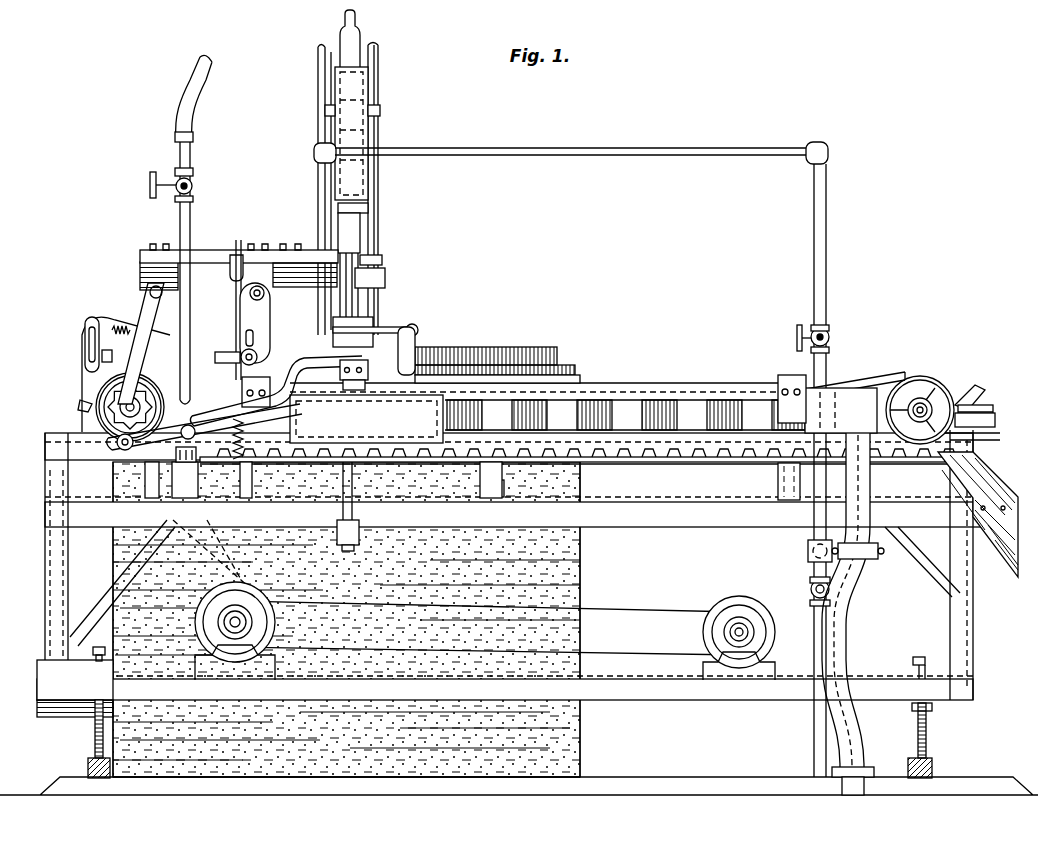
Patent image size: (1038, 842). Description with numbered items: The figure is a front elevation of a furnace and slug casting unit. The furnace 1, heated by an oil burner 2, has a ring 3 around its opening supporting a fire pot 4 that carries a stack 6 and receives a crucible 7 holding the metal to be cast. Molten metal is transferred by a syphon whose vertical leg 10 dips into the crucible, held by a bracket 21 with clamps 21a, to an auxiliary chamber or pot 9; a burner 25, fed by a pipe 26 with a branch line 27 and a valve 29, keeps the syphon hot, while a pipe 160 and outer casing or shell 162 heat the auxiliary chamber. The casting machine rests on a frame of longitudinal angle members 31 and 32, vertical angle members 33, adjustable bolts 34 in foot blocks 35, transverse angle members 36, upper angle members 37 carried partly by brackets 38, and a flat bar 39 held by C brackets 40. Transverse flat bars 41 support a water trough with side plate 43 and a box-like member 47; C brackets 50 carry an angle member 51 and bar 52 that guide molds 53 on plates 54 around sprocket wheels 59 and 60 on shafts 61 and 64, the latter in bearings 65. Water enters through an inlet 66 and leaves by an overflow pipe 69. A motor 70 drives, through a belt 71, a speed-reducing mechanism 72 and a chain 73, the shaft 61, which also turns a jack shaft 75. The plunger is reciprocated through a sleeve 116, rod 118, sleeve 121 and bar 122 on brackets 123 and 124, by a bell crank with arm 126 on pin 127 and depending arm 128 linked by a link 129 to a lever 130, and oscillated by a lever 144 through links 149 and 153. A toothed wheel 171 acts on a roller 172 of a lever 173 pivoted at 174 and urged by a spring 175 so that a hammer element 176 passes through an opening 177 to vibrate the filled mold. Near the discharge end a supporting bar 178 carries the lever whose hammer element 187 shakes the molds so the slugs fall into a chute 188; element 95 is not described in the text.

The furnace 1 is at (580, 742).
The oil burner 2 is at (55, 714).
The ring 3 is at (577, 373).
The fire pot 4 is at (566, 362).
The stack 6 is at (378, 90).
The crucible 7 is at (545, 347).
The auxiliary chamber or pot 9 is at (380, 345).
The vertical leg 10 is at (340, 30).
The bracket 21 is at (352, 183).
The clamps or straps 21a is at (380, 112).
The burner 25 is at (320, 190).
The pipe 26 is at (815, 733).
The branch line 27 is at (814, 193).
The valve 29 is at (810, 590).
The longitudinally extending angle members 31 is at (700, 515).
The angle members 32 is at (665, 700).
The vertically disposed angle members 33 is at (46, 482).
The adjustable bolts 34 is at (97, 733).
The blocks 35 is at (90, 763).
The transversely extending angle members 36 is at (150, 492).
The angle members 37 is at (55, 447).
The brackets 38 is at (170, 492).
The flat bar 39 is at (650, 460).
The C brackets 40 is at (778, 480).
The flat bars 41 is at (245, 445).
The side plate 43 is at (547, 395).
The box-like member 47 is at (425, 418).
The C brackets 50 is at (802, 386).
The angle member 51 is at (715, 390).
The bar 52 is at (97, 355).
The molds 53 is at (622, 447).
The plate 54 is at (696, 458).
The sprocket wheel 59 is at (125, 405).
The sprocket wheel 60 is at (935, 382).
The shaft 61 is at (110, 405).
The shaft 64 is at (916, 398).
The bearings 65 is at (886, 375).
The inlet 66 is at (191, 220).
The overflow pipe 69 is at (870, 484).
The motor 70 is at (735, 605).
The belt 71 is at (620, 650).
The speed-reducing mechanism 72 is at (240, 654).
The chain 73 is at (174, 579).
The jack shaft 75 is at (85, 407).
The bracket 95 is at (356, 526).
The sleeve 116 is at (385, 280).
The rod 118 is at (368, 208).
The sleeve 121 is at (352, 232).
The bar 122 is at (222, 250).
The bracket 123 is at (262, 268).
The bracket 124 is at (160, 277).
The arm 126 is at (323, 281).
The pin 127 is at (250, 291).
The depending arm 128 is at (243, 310).
The link 129 is at (128, 342).
The lever 130 is at (90, 322).
The lever 144 is at (150, 295).
The link 149 is at (240, 255).
The link 153 is at (383, 262).
The tube or pipe 160 is at (420, 338).
The outer casing or shell 162 is at (414, 324).
The toothed wheel 171 is at (110, 412).
The roller 172 is at (130, 443).
The lever 173 is at (210, 370).
The pivot 174 is at (197, 458).
The spring 175 is at (292, 442).
The hammer element 176 is at (366, 382).
The opening 177 is at (353, 392).
The supporting bar 178 is at (977, 434).
The hammer element 187 is at (968, 390).
The chute 188 is at (1010, 563).